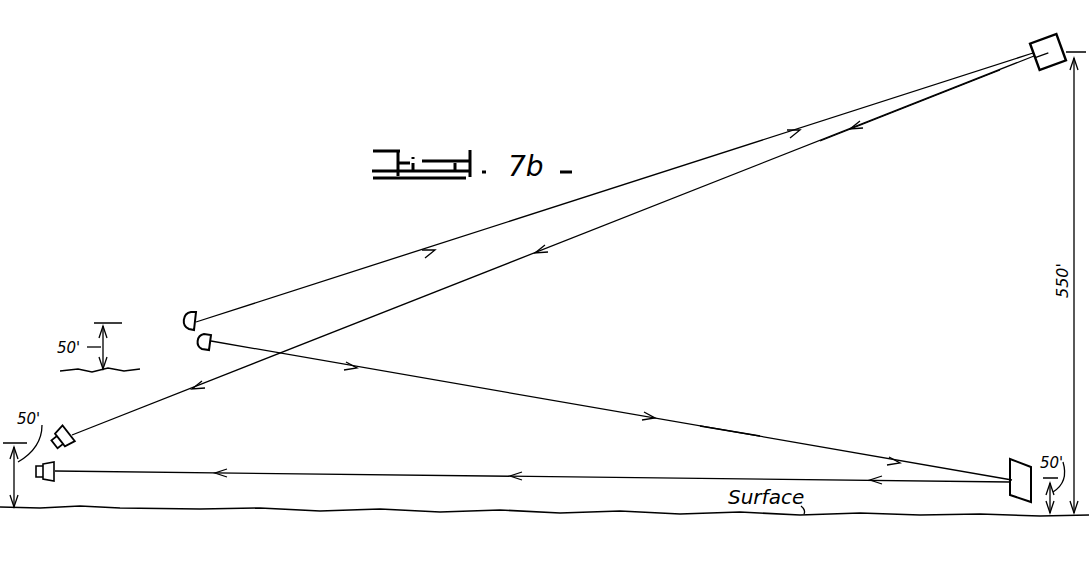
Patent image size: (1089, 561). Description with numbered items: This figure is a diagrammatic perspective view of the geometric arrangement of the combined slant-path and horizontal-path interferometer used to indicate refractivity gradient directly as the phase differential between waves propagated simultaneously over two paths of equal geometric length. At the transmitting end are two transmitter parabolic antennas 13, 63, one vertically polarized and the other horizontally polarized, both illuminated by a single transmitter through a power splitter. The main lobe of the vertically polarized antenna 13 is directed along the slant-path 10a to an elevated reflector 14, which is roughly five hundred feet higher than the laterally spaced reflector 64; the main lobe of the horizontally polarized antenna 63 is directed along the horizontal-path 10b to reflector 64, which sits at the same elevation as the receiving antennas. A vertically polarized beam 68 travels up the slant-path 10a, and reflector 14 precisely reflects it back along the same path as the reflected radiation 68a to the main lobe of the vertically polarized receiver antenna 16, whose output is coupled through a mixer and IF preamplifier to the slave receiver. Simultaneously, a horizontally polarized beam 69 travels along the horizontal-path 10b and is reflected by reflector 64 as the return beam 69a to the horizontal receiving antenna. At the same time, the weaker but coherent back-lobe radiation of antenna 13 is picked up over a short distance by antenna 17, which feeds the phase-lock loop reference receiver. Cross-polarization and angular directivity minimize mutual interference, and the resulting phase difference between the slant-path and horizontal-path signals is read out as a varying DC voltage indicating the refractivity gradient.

The reflector 14 is at (1043, 25).
The slant-path 10a is at (669, 164).
The horizontal-path 10b is at (720, 426).
The vertically polarized beam 68 is at (845, 114).
The reflected main lobe radiation 68a is at (835, 135).
The transmitter parabolic antenna 13 is at (195, 316).
The transmitter parabolic antenna 63 is at (204, 343).
The reflector 64 is at (1017, 459).
The horizontally polarized beam 69 is at (552, 404).
The reflected horizontally polarized beam 69a is at (505, 475).
The vertically polarized receiver antenna 16 is at (73, 431).
The antenna 17 is at (55, 480).